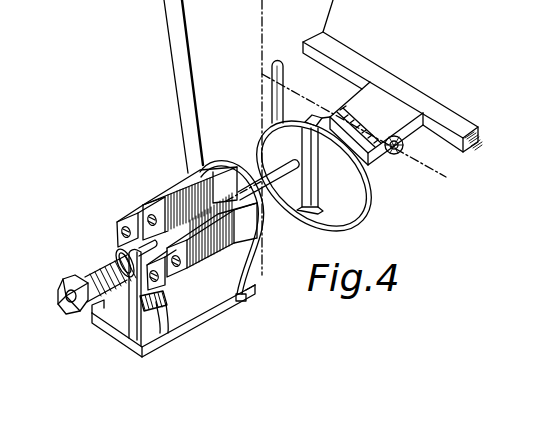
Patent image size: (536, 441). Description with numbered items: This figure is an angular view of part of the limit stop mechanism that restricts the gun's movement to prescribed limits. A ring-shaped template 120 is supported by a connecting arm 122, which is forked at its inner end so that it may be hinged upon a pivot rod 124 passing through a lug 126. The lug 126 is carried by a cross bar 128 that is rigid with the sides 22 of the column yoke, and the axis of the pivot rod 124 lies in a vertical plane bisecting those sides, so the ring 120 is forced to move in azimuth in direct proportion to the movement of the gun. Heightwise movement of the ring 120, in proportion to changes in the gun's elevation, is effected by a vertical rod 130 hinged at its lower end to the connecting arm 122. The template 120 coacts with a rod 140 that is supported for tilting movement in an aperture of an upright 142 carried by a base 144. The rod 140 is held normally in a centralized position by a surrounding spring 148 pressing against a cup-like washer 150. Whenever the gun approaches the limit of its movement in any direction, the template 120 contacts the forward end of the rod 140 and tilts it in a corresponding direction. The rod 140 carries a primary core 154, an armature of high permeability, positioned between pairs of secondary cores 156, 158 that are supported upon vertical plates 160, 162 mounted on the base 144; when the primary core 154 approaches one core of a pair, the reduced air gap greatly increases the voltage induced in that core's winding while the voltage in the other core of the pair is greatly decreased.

The side of column yoke 22 is at (182, 70).
The ring-shaped template 120 is at (347, 232).
The connecting arm 122 is at (323, 157).
The pivot rod 124 is at (396, 154).
The lug 126 is at (388, 102).
The cross bar 128 is at (345, 58).
The vertical rod 130 is at (283, 71).
The rod 140 is at (254, 174).
The upright 142 is at (115, 313).
The base 144 is at (167, 343).
The spring 148 is at (95, 267).
The cup-like washer 150 is at (108, 250).
The primary core 154 is at (194, 235).
The secondary core 156 is at (128, 217).
The secondary core 158 is at (160, 203).
The vertical plate 160 is at (158, 301).
The vertical plate 162 is at (222, 159).